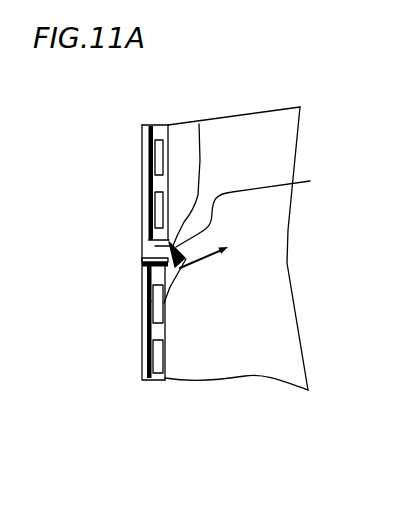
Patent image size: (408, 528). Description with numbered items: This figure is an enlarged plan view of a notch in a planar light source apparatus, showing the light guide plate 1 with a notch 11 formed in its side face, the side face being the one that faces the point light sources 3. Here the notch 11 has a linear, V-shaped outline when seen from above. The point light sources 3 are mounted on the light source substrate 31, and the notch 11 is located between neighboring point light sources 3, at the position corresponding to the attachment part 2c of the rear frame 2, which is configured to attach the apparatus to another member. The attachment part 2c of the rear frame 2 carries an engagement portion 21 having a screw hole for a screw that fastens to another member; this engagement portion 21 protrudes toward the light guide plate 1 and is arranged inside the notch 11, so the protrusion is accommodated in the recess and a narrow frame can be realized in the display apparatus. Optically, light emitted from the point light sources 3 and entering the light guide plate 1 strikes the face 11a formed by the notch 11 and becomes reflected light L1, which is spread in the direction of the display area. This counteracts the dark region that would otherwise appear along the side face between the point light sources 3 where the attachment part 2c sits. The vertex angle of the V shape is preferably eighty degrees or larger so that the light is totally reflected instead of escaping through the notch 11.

The light guide plate 1 is at (280, 142).
The notch 11 is at (263, 210).
The face formed by the notch 11a is at (199, 124).
The rear frame 2 is at (142, 338).
The attachment part 2c is at (142, 269).
The engagement portion 21 is at (168, 262).
The point light source 3 is at (142, 373).
The light source substrate 31 is at (148, 126).
The reflected light L1 is at (224, 253).